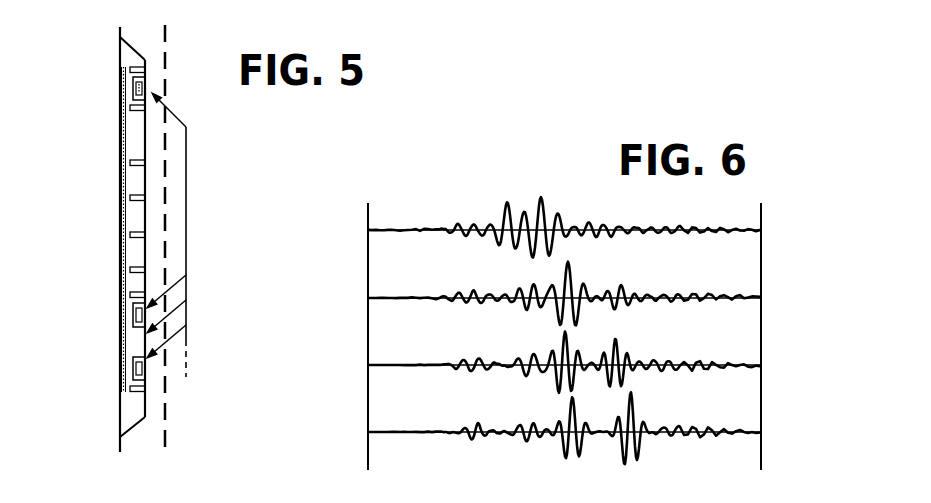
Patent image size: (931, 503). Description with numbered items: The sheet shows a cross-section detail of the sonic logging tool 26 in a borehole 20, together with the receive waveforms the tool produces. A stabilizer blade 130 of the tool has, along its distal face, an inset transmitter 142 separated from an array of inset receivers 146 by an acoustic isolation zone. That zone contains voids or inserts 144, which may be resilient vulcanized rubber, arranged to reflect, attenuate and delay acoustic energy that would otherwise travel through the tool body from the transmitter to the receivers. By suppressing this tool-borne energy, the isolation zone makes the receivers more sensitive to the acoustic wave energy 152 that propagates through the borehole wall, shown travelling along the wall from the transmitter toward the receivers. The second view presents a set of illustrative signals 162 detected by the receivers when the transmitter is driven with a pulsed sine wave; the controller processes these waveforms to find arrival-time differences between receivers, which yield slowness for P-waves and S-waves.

In FIG. 5, the borehole 20 is at (165, 68).
In FIG. 5, the sonic logging tool 26 is at (120, 38).
In FIG. 5, the stabilizer blade 130 is at (142, 419).
In FIG. 5, the inset transmitter 142 is at (136, 88).
In FIG. 5, the inserts 144 is at (106, 229).
In FIG. 5, the inset receivers 146 is at (109, 341).
In FIG. 5, the acoustic wave energy 152 is at (186, 127).
In FIG. 6, the illustrative signals 162 is at (772, 210).